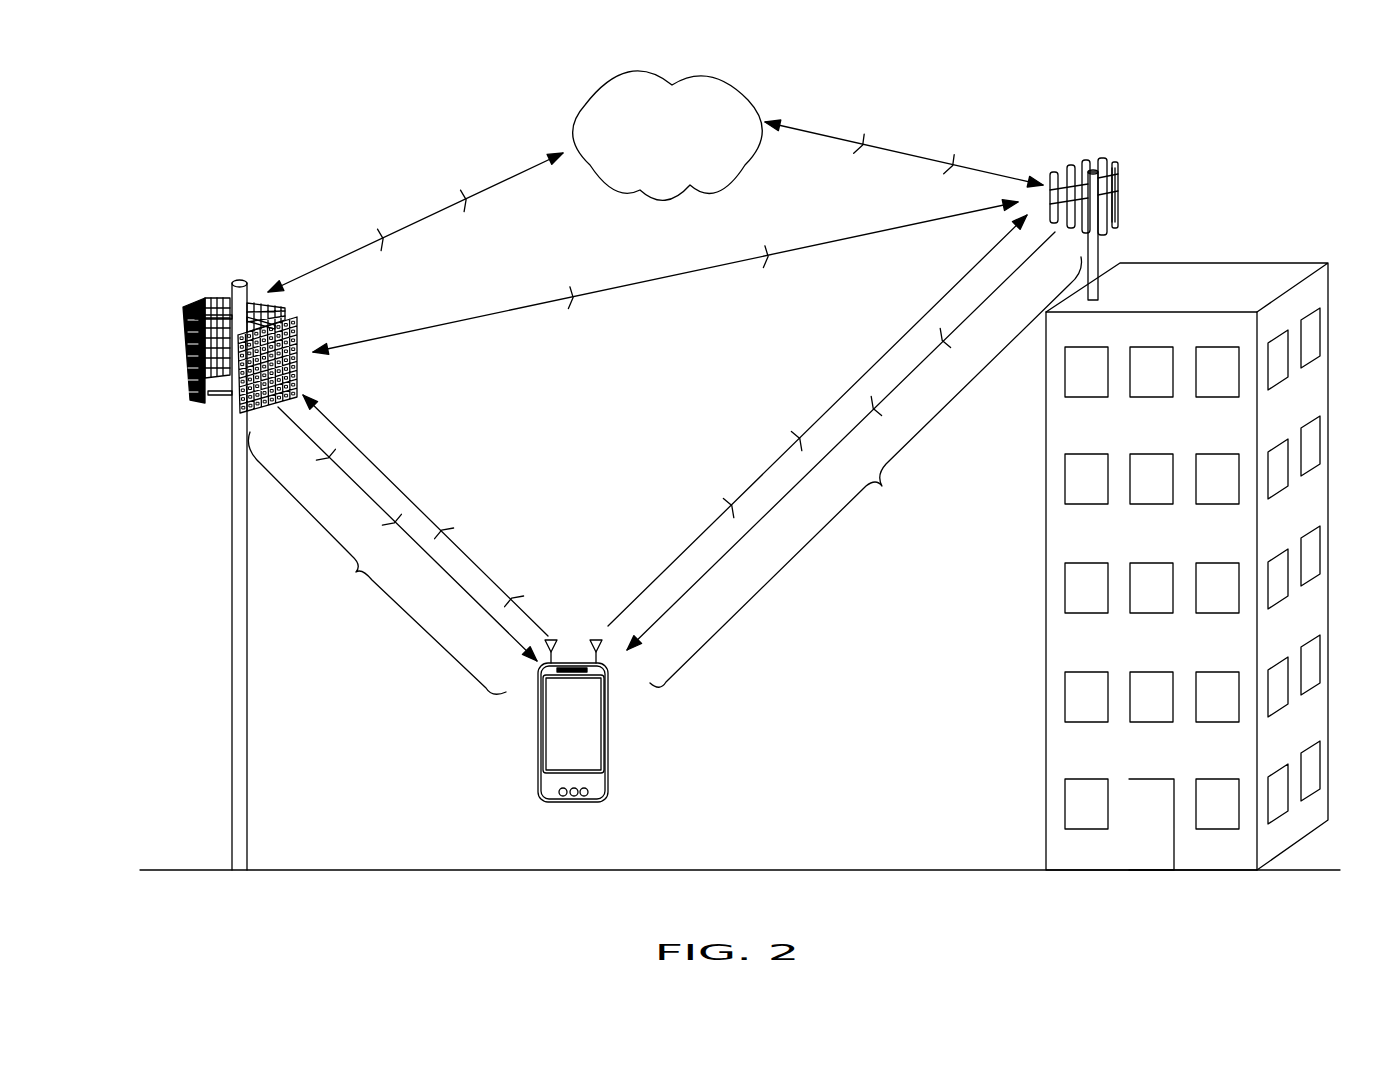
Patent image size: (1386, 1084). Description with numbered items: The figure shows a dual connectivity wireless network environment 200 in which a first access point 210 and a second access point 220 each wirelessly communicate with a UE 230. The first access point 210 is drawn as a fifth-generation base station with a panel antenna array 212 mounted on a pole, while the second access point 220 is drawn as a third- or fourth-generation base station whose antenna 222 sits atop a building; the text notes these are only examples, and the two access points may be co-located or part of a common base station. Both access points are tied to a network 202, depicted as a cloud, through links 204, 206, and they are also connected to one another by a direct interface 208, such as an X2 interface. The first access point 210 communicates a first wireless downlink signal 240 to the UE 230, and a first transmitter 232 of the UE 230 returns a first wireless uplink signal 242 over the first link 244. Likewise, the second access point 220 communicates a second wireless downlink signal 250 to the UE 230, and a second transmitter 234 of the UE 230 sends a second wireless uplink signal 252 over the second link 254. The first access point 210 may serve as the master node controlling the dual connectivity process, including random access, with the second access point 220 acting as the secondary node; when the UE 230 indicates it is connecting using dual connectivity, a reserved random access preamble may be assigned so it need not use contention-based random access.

The dual connectivity wireless network environment 200 is at (352, 146).
The network 202 is at (706, 78).
The communication link between base station and network 204 is at (421, 224).
The communication link between network and antenna 206 is at (903, 155).
The direct interface 208 is at (650, 283).
The first access point 210 is at (172, 553).
The antenna array of first base station 212 is at (297, 322).
The second access point 220 is at (1172, 236).
The antenna of second base station 222 is at (1100, 165).
The UE 230 is at (537, 736).
The first transmitter 232 is at (551, 638).
The second transmitter 234 is at (596, 638).
The first wireless downlink signal 240 is at (427, 565).
The uplink signal to first base station 242 is at (401, 489).
The first communication link 244 is at (364, 580).
The second wireless downlink signal 250 is at (752, 530).
The second wireless uplink signal 252 is at (850, 388).
The second communication link 254 is at (874, 488).